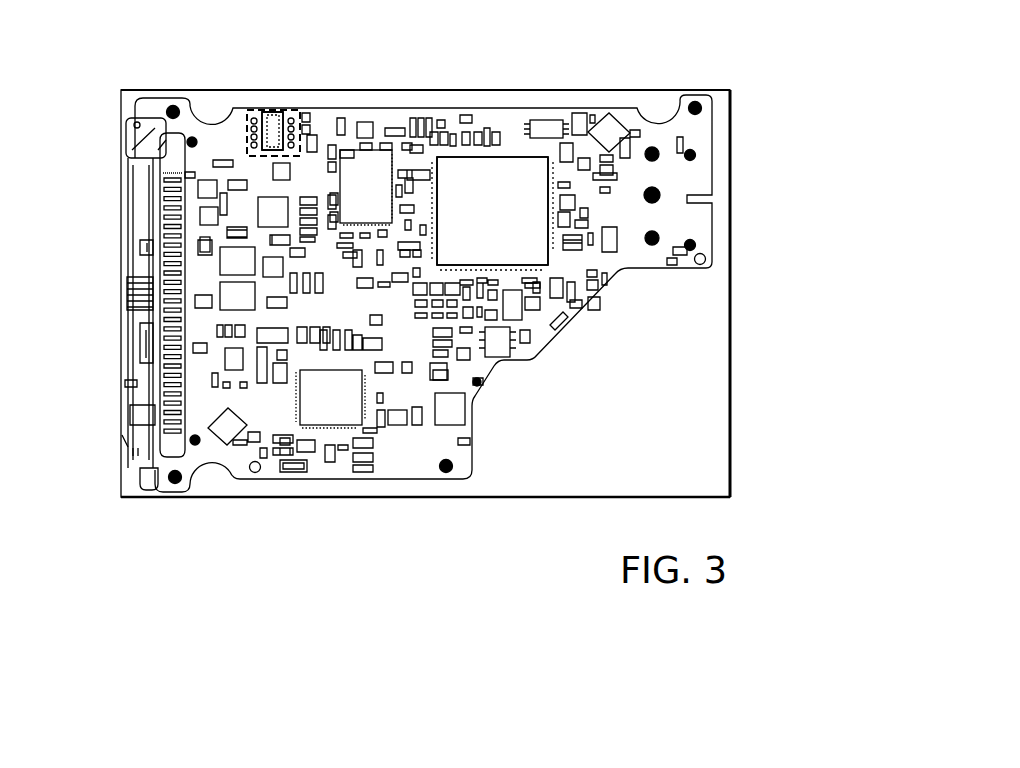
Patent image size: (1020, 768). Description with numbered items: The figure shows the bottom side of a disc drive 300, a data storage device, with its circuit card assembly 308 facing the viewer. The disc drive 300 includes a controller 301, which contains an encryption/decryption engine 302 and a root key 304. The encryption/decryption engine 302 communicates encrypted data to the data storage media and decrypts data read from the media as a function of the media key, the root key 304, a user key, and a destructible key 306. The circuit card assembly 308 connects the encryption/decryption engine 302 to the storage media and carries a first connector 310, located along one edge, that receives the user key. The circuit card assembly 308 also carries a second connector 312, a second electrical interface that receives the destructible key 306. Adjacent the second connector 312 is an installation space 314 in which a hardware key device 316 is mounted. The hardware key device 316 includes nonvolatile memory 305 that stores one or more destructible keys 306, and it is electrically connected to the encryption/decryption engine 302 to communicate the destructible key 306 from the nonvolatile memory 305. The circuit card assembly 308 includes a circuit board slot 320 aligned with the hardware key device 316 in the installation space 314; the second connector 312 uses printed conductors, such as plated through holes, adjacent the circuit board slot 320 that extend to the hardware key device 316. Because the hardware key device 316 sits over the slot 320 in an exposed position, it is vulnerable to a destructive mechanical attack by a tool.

The disc drive 300 is at (790, 91).
The controller 301 is at (487, 155).
The encryption/decryption engine 302 is at (420, 162).
The root key 304 is at (420, 162).
The nonvolatile memory 305 is at (262, 112).
The destructible key 306 is at (175, 104).
The circuit card assembly 308 is at (523, 108).
The first connector 310 is at (130, 290).
The second connector 312 is at (247, 142).
The installation space 314 is at (247, 157).
The hardware key device 316 is at (175, 104).
The circuit board slot 320 is at (270, 98).